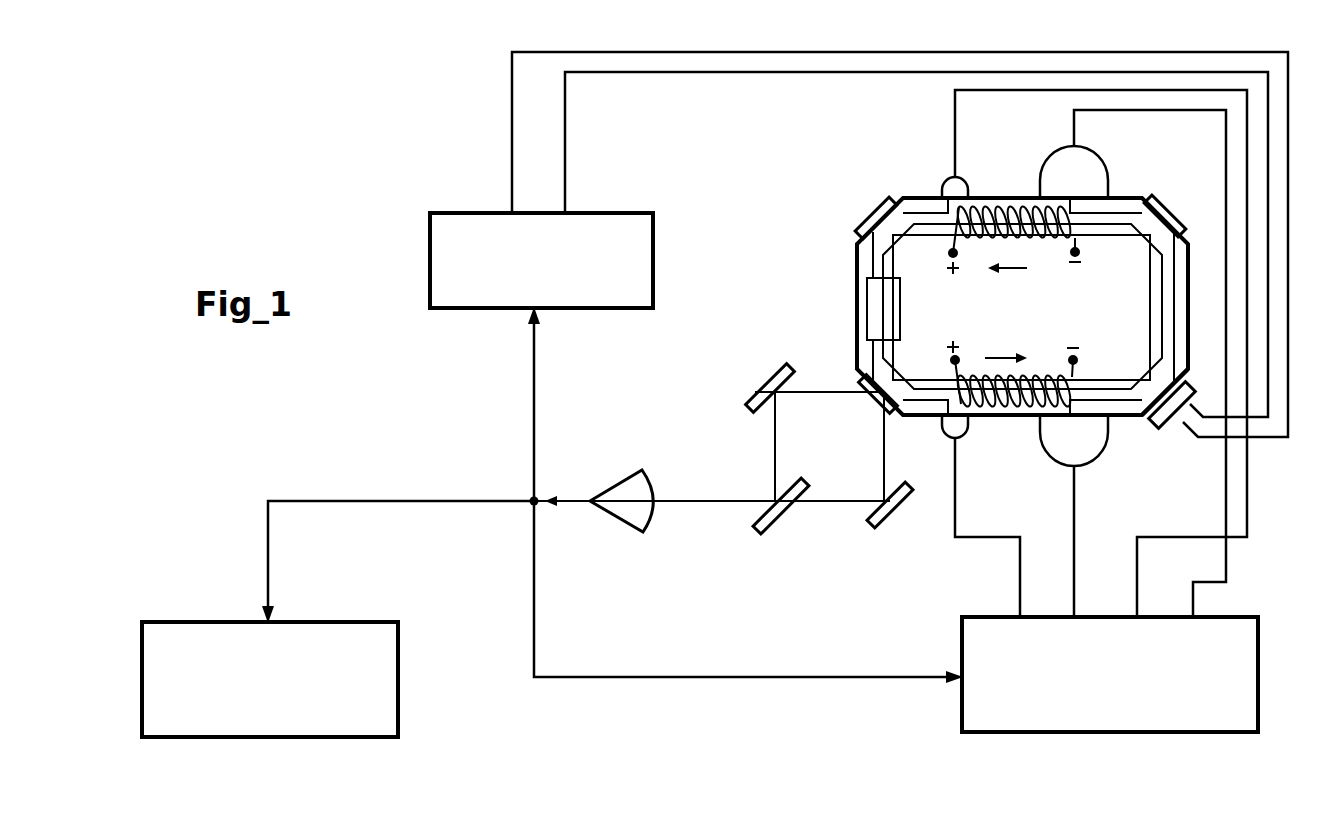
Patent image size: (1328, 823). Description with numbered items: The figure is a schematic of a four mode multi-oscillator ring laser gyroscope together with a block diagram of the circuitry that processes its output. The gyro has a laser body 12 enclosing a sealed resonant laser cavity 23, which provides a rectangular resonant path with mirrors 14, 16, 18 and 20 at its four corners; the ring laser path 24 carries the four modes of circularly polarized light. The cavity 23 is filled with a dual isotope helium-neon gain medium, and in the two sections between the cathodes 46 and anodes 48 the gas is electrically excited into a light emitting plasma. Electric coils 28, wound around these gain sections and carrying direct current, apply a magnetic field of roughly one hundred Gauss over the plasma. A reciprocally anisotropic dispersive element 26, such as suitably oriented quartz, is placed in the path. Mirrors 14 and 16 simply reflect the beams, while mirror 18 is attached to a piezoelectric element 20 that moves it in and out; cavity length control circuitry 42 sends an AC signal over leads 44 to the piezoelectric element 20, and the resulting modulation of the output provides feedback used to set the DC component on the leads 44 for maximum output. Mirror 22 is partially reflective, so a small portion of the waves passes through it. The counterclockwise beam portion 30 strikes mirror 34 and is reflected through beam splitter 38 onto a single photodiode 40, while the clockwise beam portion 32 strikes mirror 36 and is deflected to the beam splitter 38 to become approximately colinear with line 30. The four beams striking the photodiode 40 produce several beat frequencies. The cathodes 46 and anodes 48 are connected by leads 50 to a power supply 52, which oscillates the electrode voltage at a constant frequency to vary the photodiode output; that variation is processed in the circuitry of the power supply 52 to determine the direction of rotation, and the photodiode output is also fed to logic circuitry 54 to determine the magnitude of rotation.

The laser body 12 is at (857, 305).
The mirror 14 is at (1175, 213).
The mirror 16 is at (880, 205).
The mirror 18 is at (1143, 412).
The piezoelectric element 20 is at (1172, 422).
The partially reflective mirror 22 is at (878, 384).
The sealed resonant laser cavity 23 is at (873, 350).
The ring laser path 24 is at (878, 268).
The reciprocally anisotropic dispersive element 26 is at (895, 315).
The electric coils 28 is at (1043, 222).
The counterclockwise beam portion 30 is at (880, 442).
The clockwise beam portion 32 is at (808, 393).
The mirror 34 is at (890, 522).
The mirror 36 is at (760, 380).
The beam splitter 38 is at (768, 520).
The photodiode 40 is at (640, 522).
The cavity length control circuitry 42 is at (634, 218).
The leads 44 is at (562, 185).
The cathodes 46 is at (1098, 175).
The anodes 48 is at (958, 188).
The leads 50 is at (955, 128).
The power supply 52 is at (970, 718).
The logic circuitry 54 is at (197, 628).